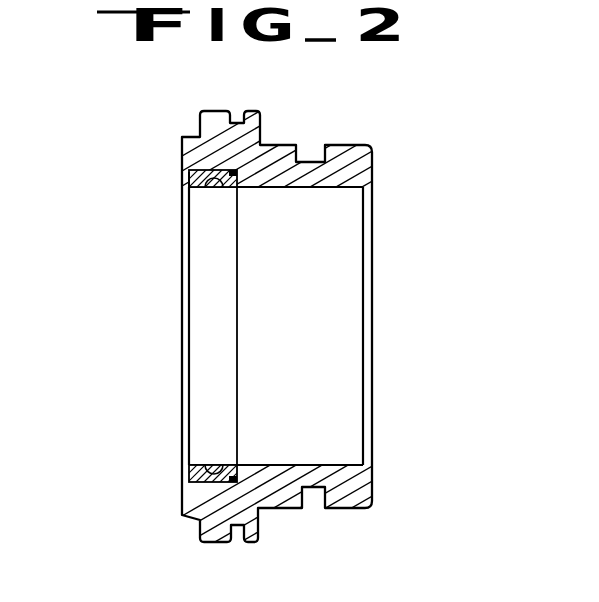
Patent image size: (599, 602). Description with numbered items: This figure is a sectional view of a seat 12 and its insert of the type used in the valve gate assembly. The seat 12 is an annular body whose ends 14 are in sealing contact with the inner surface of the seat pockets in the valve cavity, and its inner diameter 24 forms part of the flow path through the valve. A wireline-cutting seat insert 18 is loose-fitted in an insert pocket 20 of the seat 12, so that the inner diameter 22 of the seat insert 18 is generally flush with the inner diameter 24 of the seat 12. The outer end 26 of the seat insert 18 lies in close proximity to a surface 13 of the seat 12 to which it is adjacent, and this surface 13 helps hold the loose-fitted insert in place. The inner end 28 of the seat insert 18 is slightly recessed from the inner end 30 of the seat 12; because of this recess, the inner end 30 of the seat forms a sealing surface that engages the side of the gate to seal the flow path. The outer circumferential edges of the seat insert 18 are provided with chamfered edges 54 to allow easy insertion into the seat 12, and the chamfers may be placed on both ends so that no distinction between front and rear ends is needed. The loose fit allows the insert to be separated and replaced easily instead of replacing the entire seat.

The seat 12 is at (348, 133).
The surface 13 is at (224, 182).
The ends 14 is at (374, 166).
The wireline-cutting seat insert 18 is at (197, 512).
The insert pocket 20 is at (206, 478).
The inner diameter of the seat insert 22 is at (223, 470).
The inner diameter of the seat 24 is at (338, 464).
The outer end of the seat insert 26 is at (247, 177).
The inner end of the seat insert 28 is at (186, 190).
The inner end of the seat 30 is at (181, 143).
The chamfered edges 54 is at (200, 178).